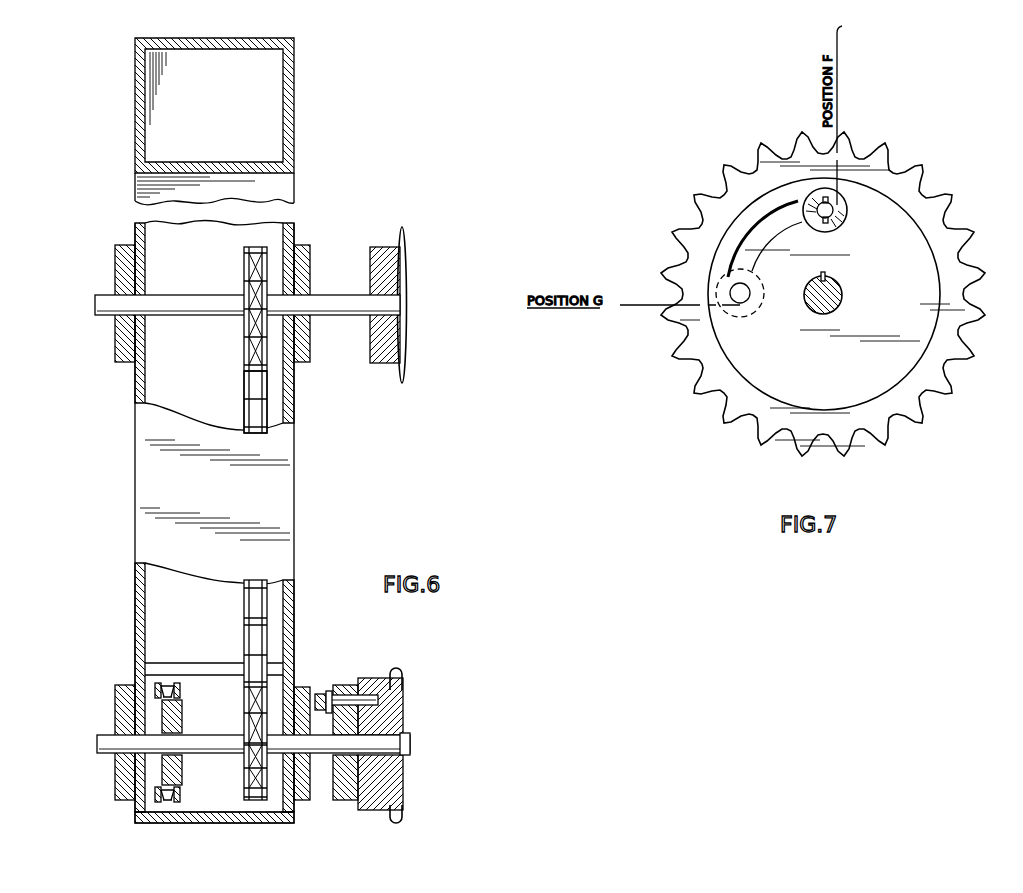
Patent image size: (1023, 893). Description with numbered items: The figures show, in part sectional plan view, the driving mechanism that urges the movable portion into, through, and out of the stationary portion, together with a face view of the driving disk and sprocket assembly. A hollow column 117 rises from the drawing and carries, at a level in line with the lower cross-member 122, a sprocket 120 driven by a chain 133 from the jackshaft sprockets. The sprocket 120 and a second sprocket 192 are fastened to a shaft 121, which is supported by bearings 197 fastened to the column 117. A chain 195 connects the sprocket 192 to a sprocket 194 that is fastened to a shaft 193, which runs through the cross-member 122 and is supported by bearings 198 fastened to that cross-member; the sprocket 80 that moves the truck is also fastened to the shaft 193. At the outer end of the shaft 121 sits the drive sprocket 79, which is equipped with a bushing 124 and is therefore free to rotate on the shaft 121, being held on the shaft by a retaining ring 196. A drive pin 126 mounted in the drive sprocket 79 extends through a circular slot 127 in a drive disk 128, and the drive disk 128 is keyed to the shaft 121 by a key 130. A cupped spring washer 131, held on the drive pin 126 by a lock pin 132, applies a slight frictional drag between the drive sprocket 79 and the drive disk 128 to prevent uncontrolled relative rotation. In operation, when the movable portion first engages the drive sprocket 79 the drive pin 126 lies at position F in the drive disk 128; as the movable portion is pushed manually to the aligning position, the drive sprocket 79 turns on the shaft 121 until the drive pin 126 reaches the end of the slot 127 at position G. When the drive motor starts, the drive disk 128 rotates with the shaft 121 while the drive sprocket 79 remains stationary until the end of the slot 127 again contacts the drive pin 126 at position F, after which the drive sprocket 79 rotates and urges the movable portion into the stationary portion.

In FIG. 6, the drive sprocket 79 is at (388, 790).
In FIG. 7, the drive sprocket 79 is at (921, 419).
In FIG. 6, the sprocket 80 is at (396, 367).
In FIG. 6, the column 117 is at (135, 816).
In FIG. 6, the sprocket 120 is at (181, 766).
In FIG. 6, the shaft 121 is at (410, 750).
In FIG. 6, the lower cross-member 122 is at (270, 481).
In FIG. 6, the bushing 124 is at (402, 716).
In FIG. 6, the drive pin 126 is at (369, 695).
In FIG. 7, the drive pin 126 is at (808, 200).
In FIG. 7, the circular slot 127 is at (770, 236).
In FIG. 6, the drive disk 128 is at (345, 792).
In FIG. 7, the drive disk 128 is at (750, 357).
In FIG. 7, the key 130 is at (843, 290).
In FIG. 6, the cupped spring washer 131 is at (331, 690).
In FIG. 7, the cupped spring washer 131 is at (838, 206).
In FIG. 6, the lock pin 132 is at (320, 693).
In FIG. 7, the lock pin 132 is at (830, 223).
In FIG. 6, the chain 133 is at (179, 690).
In FIG. 6, the sprocket 192 is at (251, 726).
In FIG. 6, the shaft 193 is at (103, 302).
In FIG. 6, the sprocket 194 is at (246, 270).
In FIG. 6, the chain 195 is at (246, 380).
In FIG. 6, the retaining ring 196 is at (408, 733).
In FIG. 6, the bearing 197 is at (111, 710).
In FIG. 6, the bearing 198 is at (115, 337).